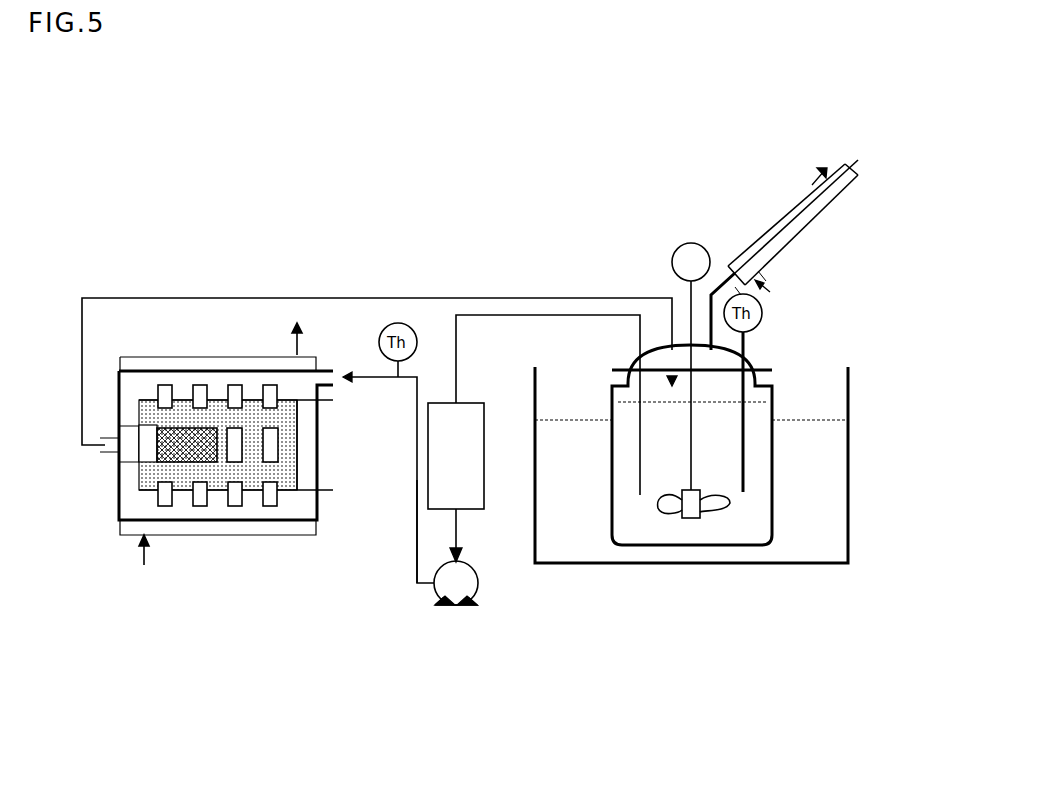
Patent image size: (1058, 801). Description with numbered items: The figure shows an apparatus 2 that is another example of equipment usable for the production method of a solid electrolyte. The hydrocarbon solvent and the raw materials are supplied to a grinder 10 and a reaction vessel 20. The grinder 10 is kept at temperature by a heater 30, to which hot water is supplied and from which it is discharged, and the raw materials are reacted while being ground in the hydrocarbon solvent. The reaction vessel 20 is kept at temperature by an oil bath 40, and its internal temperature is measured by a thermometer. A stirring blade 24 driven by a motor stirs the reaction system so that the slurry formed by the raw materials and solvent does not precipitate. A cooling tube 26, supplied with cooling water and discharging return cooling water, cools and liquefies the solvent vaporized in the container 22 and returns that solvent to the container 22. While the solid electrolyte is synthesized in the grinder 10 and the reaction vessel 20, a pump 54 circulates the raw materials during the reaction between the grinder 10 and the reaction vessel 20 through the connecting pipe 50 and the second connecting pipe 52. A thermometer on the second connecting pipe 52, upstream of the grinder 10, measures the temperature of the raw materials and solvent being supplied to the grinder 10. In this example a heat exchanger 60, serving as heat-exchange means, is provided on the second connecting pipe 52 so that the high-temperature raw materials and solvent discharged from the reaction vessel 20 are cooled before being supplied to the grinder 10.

The apparatus 2 is at (690, 152).
The grinder 10 is at (118, 482).
The reaction vessel 20 is at (712, 546).
The container 22 is at (643, 546).
The stirring blade 24 is at (693, 440).
The cooling tube 26 is at (800, 235).
The heater 30 is at (225, 536).
The oil bath 40 is at (850, 485).
The connecting pipe 50 is at (438, 298).
The second connecting pipe 52 is at (417, 520).
The pump 54 is at (456, 607).
The heat exchanger 60 is at (468, 403).